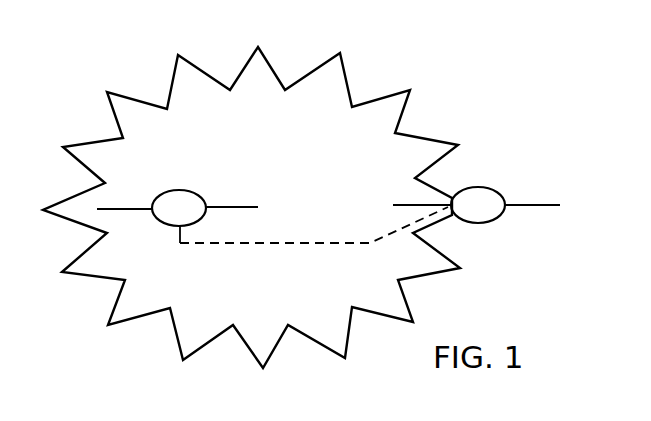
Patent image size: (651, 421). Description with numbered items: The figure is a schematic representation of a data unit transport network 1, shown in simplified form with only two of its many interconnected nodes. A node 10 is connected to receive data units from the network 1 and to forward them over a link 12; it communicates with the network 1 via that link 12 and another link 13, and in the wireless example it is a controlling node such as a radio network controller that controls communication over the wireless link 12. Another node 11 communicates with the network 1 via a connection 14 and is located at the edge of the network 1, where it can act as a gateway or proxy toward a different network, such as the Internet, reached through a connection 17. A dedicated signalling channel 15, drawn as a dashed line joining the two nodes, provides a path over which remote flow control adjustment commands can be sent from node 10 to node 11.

The data unit transport network 1 is at (176, 65).
The node 10 is at (170, 190).
The node 11 is at (485, 186).
The link 12 is at (132, 210).
The link 13 is at (232, 205).
The connection 14 is at (403, 204).
The dedicated signalling channel 15 is at (275, 245).
The connection 17 is at (532, 207).